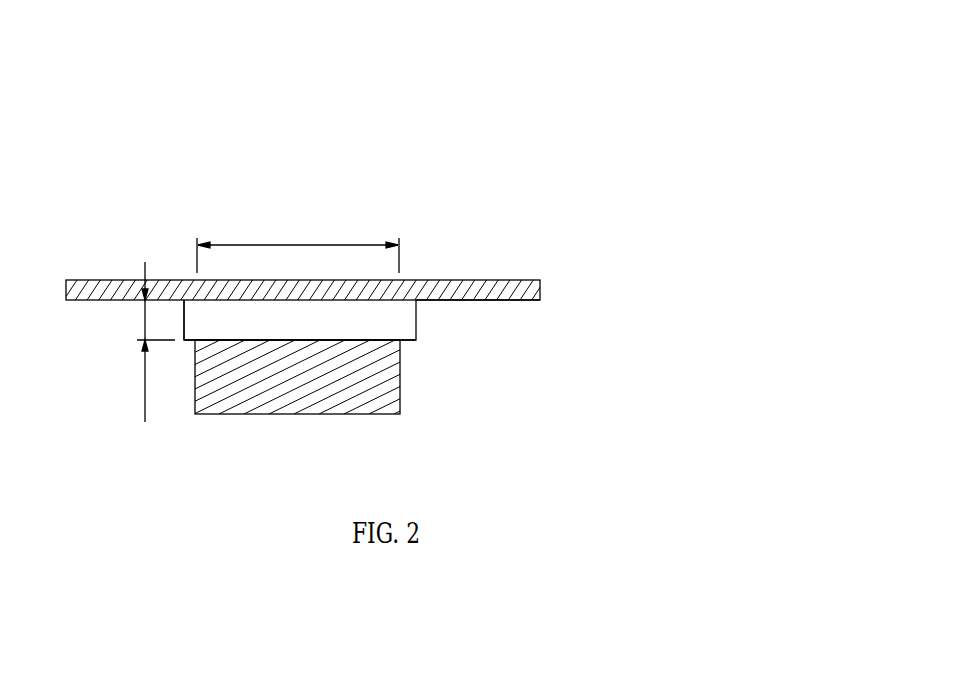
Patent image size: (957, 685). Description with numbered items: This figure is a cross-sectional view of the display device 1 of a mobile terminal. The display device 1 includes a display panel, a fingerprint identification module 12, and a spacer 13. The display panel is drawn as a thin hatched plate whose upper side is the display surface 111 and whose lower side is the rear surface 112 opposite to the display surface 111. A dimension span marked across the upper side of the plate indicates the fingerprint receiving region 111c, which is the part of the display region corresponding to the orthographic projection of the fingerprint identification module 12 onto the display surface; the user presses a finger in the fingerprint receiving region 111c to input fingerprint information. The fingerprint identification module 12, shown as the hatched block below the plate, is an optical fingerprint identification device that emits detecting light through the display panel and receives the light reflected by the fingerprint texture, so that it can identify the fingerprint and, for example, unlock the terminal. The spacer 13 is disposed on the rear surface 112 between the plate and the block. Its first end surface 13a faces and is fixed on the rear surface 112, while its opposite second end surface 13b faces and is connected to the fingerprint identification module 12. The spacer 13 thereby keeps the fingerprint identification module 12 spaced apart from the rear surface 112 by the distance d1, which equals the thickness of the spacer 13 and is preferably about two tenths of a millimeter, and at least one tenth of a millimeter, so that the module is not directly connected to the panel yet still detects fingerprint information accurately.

The display device 1 is at (483, 155).
The display surface 111 is at (513, 280).
The fingerprint receiving region 111c is at (298, 239).
The rear surface 112 is at (520, 300).
The spacer 13 is at (421, 329).
The first end surface 13a is at (187, 297).
The second end surface 13b is at (191, 341).
The fingerprint identification module 12 is at (387, 413).
The distance d1 is at (139, 342).